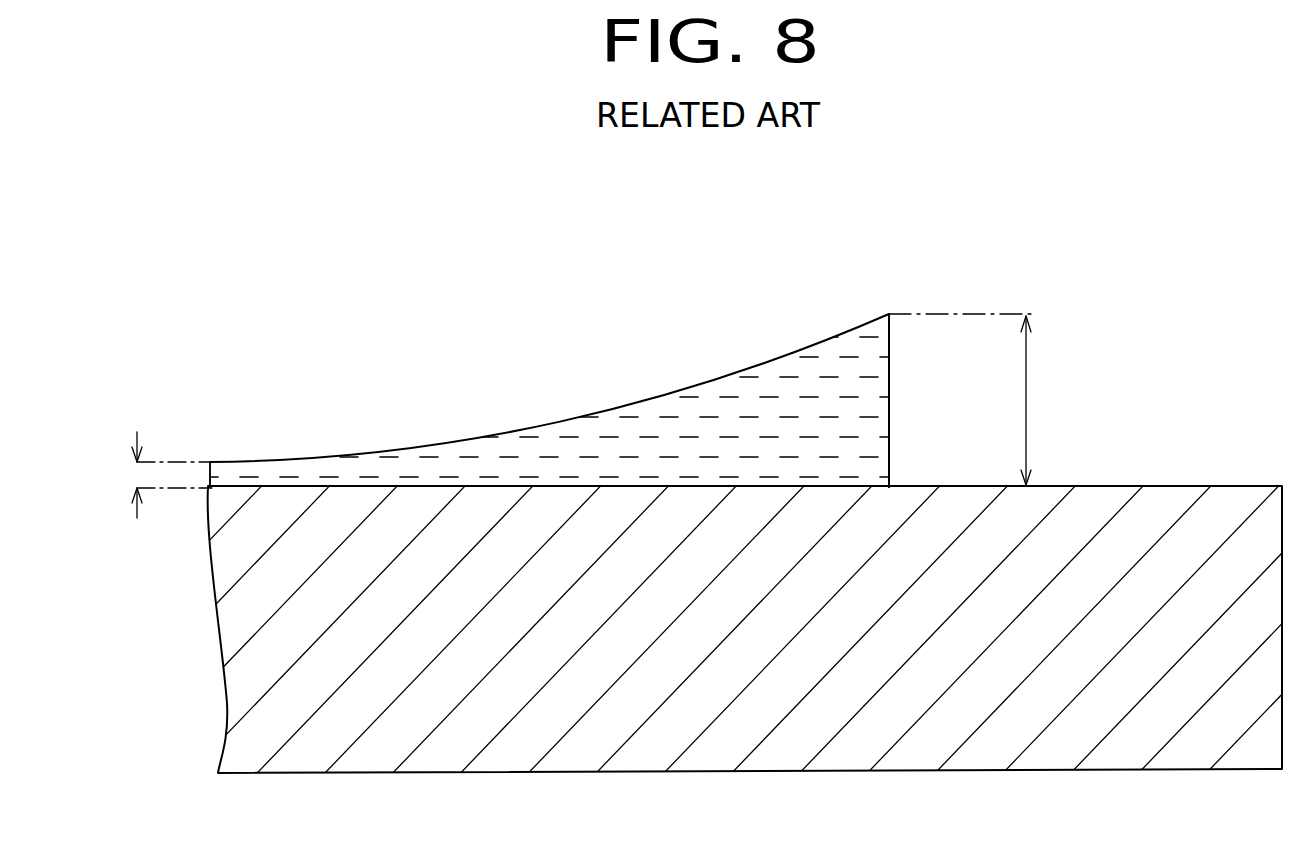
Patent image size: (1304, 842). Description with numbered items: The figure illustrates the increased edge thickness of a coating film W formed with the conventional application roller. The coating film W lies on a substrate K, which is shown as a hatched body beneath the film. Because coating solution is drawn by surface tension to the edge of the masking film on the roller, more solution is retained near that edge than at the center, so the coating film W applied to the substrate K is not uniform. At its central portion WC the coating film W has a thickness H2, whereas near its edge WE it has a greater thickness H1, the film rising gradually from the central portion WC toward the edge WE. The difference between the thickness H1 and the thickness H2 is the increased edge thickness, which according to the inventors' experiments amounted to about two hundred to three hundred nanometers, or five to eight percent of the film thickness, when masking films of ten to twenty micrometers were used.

The coating film W is at (732, 377).
The central portion WC is at (227, 472).
The edge WE is at (882, 385).
The thickness near the edge H1 is at (975, 399).
The thickness at the central portion H2 is at (155, 475).
The substrate K is at (1170, 508).